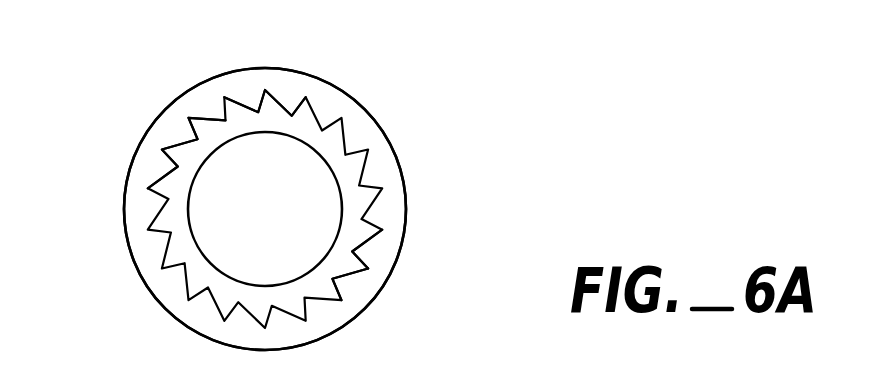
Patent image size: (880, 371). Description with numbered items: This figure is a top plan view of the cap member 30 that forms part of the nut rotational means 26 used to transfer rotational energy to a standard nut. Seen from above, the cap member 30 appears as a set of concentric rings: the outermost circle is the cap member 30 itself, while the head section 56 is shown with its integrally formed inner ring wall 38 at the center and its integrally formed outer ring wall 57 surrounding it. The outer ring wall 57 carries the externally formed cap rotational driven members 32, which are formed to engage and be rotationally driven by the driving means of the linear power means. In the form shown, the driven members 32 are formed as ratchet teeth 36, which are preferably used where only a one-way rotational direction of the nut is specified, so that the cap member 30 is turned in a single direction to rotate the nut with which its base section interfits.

The nut rotational means 26 is at (383, 75).
The cap member 30 is at (400, 158).
The cap rotational driven members 32 is at (380, 195).
The ratchet teeth 36 is at (180, 142).
The inner ring wall 38 is at (195, 233).
The head section 56 is at (370, 240).
The outer ring wall 57 is at (335, 283).